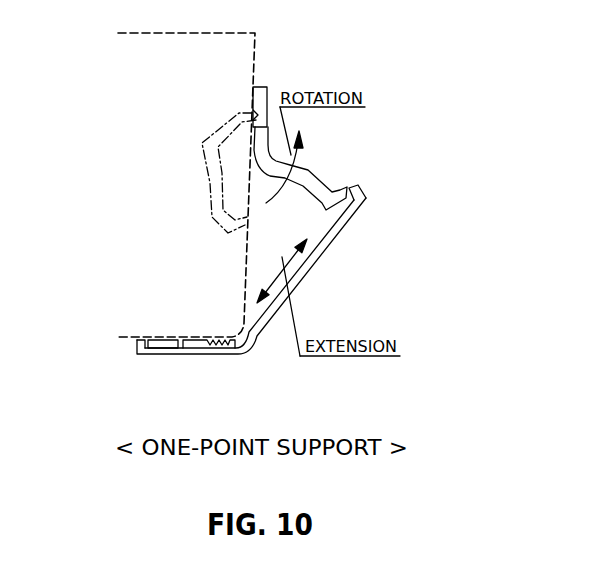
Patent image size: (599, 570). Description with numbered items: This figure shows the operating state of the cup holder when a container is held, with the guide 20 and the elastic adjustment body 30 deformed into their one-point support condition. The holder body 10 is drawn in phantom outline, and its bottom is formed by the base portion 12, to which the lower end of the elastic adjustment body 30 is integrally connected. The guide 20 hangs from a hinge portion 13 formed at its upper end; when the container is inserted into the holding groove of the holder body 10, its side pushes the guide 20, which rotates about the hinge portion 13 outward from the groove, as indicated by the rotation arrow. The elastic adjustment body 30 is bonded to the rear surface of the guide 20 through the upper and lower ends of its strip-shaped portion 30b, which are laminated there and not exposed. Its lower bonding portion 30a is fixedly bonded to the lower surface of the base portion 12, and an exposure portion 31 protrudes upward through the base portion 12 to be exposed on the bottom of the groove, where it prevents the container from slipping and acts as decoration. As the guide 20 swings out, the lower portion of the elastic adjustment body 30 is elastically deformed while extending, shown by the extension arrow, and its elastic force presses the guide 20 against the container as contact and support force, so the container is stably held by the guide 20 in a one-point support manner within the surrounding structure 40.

The display device 40 is at (255, 45).
The holder body 10 is at (251, 88).
The hinge portion 13 is at (257, 113).
The guide 20 is at (327, 183).
The elastic adjustment body 30 is at (271, 302).
The lower bonding portion 30a is at (165, 355).
The strip-shaped portion 30b is at (297, 185).
The exposure portion 31 is at (177, 338).
The base portion 12 is at (207, 338).